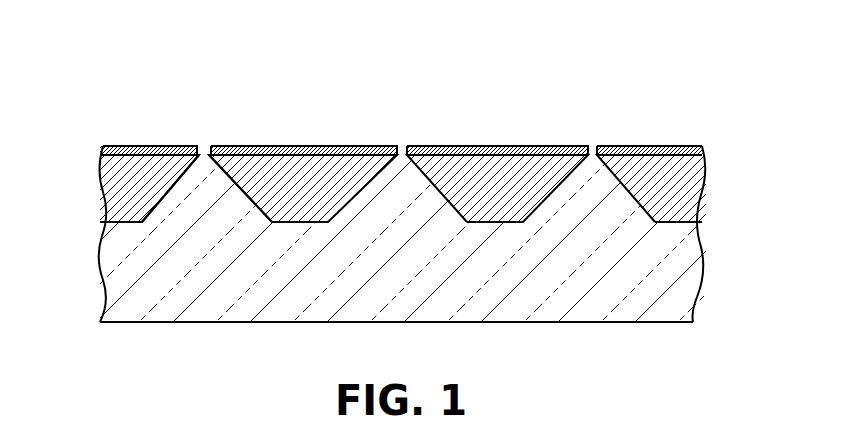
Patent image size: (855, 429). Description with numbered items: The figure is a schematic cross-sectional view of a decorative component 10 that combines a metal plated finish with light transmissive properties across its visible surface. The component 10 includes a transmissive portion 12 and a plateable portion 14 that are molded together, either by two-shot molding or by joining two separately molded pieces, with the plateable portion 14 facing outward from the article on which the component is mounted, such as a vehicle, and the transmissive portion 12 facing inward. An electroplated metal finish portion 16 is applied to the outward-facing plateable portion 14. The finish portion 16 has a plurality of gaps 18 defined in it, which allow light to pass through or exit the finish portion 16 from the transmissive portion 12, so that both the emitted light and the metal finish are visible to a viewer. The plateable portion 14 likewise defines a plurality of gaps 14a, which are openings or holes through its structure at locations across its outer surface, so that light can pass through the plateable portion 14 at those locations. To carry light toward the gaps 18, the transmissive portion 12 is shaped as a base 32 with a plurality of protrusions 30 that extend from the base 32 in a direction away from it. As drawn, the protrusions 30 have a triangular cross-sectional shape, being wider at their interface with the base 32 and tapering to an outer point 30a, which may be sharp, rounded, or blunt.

The decorative component 10 is at (686, 56).
The transmissive portion 12 is at (677, 288).
The plateable portion 14 is at (680, 189).
The gaps 14a is at (590, 151).
The metal finish portion 16 is at (626, 148).
The gaps 18 is at (401, 150).
The protrusions 30 is at (200, 198).
The outer point 30a is at (196, 148).
The base 32 is at (120, 282).